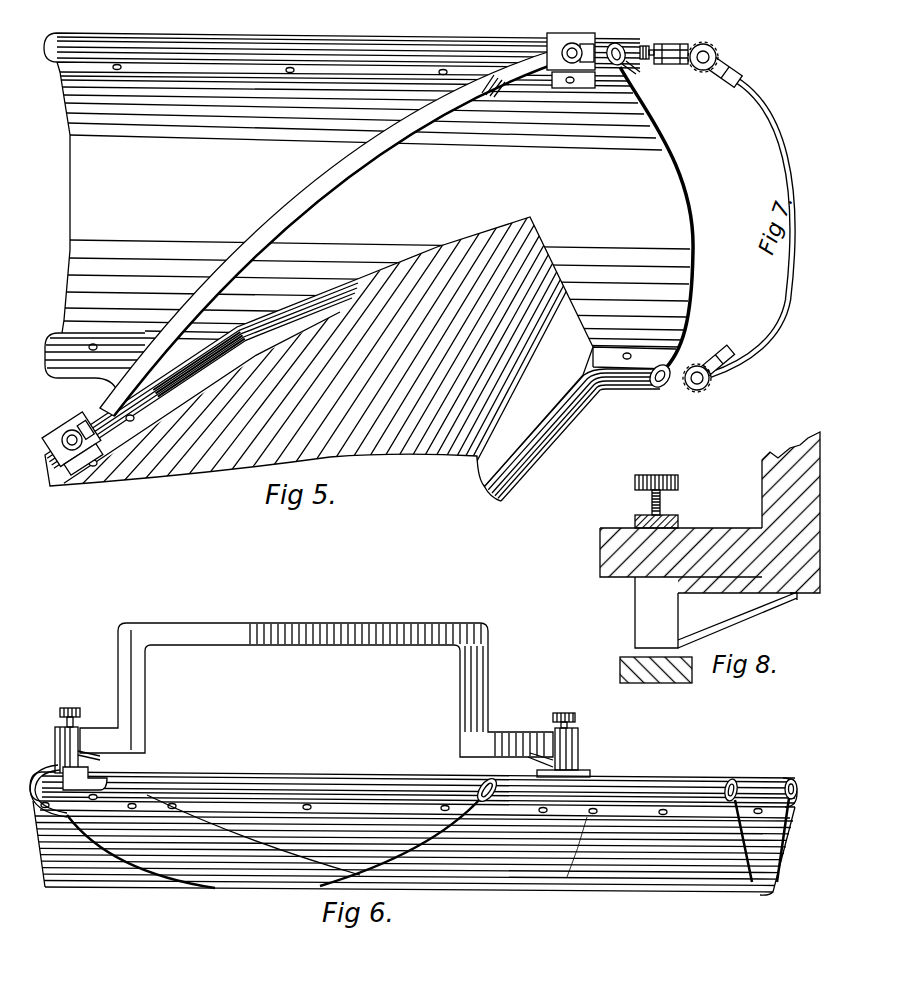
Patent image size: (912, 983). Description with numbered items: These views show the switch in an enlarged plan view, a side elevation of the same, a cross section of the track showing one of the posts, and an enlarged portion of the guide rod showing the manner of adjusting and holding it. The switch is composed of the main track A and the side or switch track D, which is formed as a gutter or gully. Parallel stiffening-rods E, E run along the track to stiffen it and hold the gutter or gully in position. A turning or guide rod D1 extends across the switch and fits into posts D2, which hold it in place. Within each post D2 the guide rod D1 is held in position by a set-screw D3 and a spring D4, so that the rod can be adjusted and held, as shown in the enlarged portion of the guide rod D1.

In FIG. 5, the main track A is at (70, 226).
In FIG. 7, the main track A is at (751, 222).
In FIG. 6, the main track A is at (774, 889).
In FIG. 5, the switch track D is at (380, 261).
In FIG. 6, the switch track D is at (274, 841).
In FIG. 5, the turning or guide rod D1 is at (366, 173).
In FIG. 8, the turning or guide rod D1 is at (681, 543).
In FIG. 6, the turning or guide rod D1 is at (401, 652).
In FIG. 5, the post D2 is at (565, 35).
In FIG. 7, the post D2 is at (690, 45).
In FIG. 8, the post D2 is at (635, 615).
In FIG. 6, the post D2 is at (581, 764).
In FIG. 5, the set-screw D3 is at (577, 36).
In FIG. 7, the set-screw D3 is at (645, 46).
In FIG. 8, the set-screw D3 is at (679, 483).
In FIG. 6, the set-screw D3 is at (579, 722).
In FIG. 8, the spring D4 is at (742, 620).
In FIG. 6, the spring D4 is at (537, 765).
In FIG. 5, the stiffening-rods E is at (51, 34).
In FIG. 7, the stiffening-rods E is at (710, 46).
In FIG. 6, the stiffening-rods E is at (50, 770).